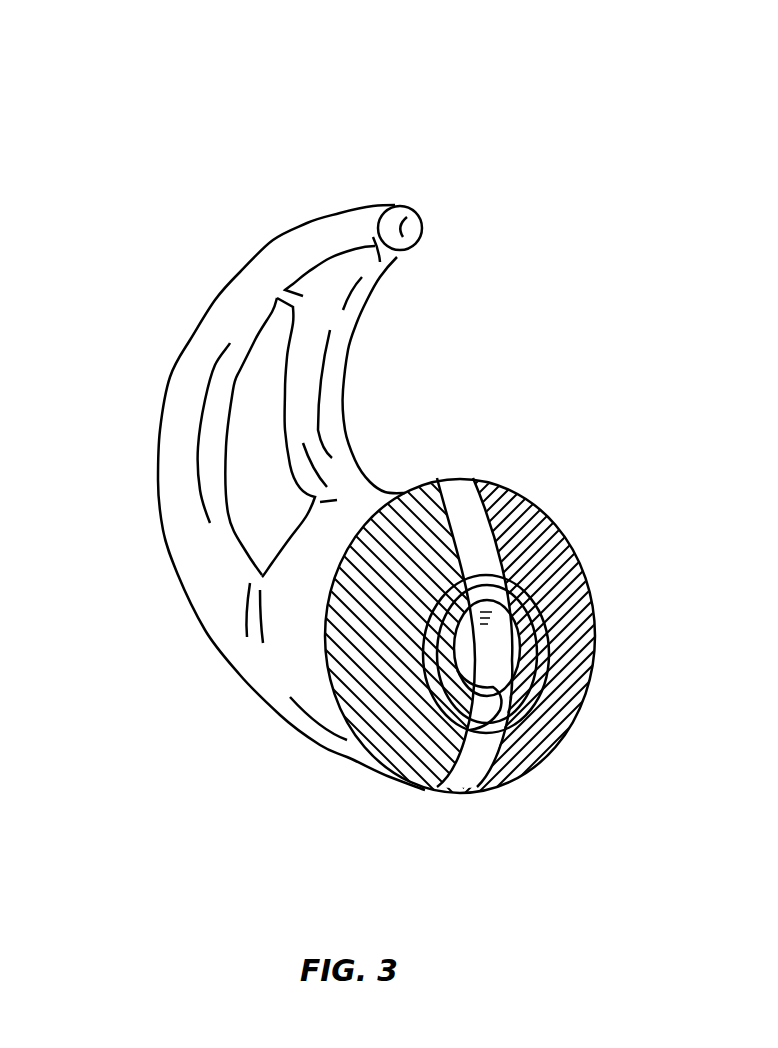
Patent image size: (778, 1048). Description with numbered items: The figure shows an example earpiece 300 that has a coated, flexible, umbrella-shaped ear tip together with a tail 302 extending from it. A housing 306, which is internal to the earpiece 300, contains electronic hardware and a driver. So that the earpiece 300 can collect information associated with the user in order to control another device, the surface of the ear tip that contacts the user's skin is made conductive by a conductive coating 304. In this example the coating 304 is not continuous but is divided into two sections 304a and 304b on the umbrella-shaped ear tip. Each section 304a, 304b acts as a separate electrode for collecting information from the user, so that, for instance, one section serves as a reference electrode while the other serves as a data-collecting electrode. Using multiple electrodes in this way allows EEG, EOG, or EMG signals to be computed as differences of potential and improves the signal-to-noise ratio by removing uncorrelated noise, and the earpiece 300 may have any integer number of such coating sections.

The earpiece 300 is at (389, 523).
The tail 302 is at (332, 423).
The conductive coating 304 is at (494, 484).
The first coating section 304a is at (553, 573).
The second coating section 304b is at (387, 690).
The housing 306 is at (290, 568).